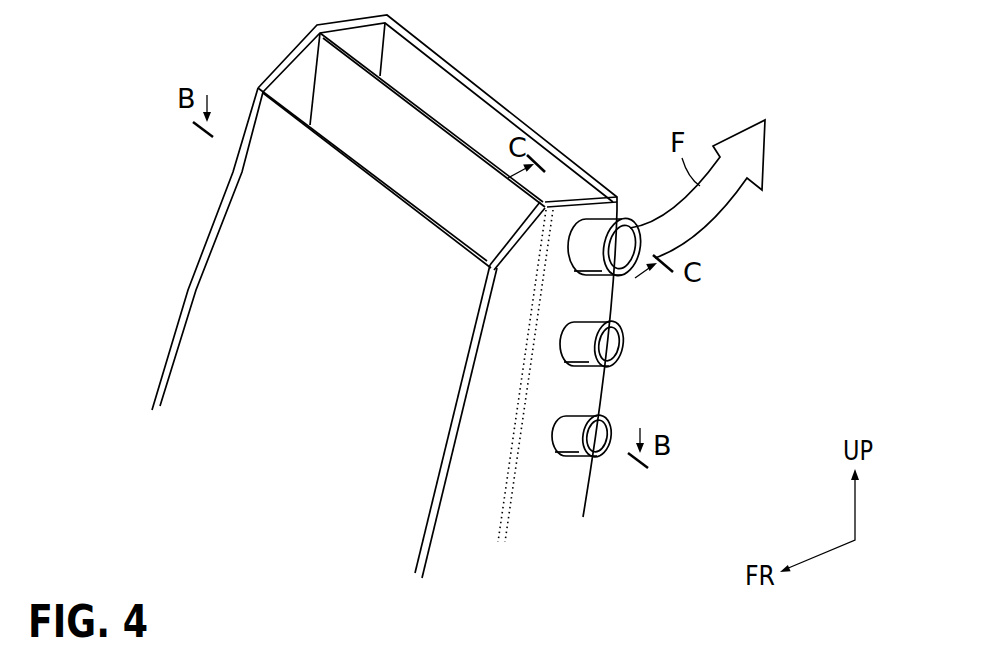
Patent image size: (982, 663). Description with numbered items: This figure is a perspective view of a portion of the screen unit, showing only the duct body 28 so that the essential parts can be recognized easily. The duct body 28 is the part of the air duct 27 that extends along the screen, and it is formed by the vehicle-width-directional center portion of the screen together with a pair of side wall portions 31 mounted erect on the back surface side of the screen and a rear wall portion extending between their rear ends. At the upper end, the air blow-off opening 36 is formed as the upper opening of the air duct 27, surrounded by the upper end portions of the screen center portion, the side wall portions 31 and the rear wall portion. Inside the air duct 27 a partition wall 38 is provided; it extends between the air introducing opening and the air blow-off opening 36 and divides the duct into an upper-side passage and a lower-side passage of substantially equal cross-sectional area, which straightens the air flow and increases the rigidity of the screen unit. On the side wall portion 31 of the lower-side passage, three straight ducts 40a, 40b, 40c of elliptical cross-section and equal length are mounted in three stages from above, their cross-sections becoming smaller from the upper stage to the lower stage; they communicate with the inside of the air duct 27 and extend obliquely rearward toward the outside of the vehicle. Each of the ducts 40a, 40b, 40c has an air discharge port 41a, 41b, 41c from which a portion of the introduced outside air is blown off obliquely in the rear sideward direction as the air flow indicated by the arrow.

The air duct 27 is at (371, 289).
The duct body 28 is at (200, 293).
The side wall portion 31 is at (560, 497).
The air blow-off opening 36 is at (480, 130).
The partition wall 38 is at (420, 98).
The duct 40a is at (596, 283).
The duct 40b is at (592, 372).
The duct 40c is at (572, 460).
The air discharge port 41a is at (640, 230).
The air discharge port 41b is at (623, 335).
The air discharge port 41c is at (607, 457).